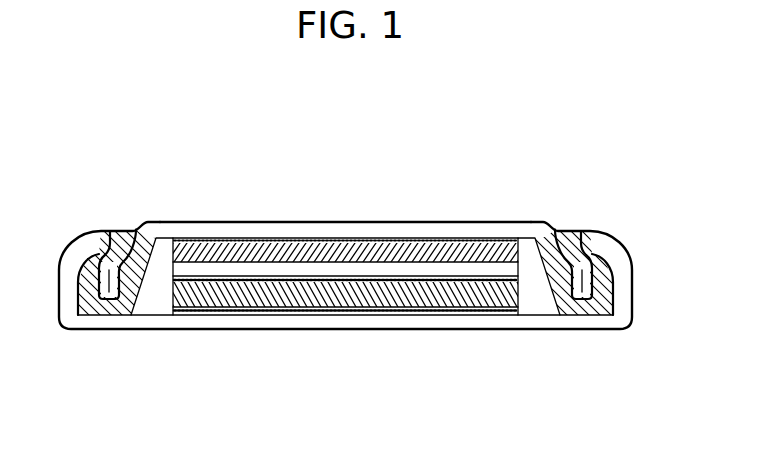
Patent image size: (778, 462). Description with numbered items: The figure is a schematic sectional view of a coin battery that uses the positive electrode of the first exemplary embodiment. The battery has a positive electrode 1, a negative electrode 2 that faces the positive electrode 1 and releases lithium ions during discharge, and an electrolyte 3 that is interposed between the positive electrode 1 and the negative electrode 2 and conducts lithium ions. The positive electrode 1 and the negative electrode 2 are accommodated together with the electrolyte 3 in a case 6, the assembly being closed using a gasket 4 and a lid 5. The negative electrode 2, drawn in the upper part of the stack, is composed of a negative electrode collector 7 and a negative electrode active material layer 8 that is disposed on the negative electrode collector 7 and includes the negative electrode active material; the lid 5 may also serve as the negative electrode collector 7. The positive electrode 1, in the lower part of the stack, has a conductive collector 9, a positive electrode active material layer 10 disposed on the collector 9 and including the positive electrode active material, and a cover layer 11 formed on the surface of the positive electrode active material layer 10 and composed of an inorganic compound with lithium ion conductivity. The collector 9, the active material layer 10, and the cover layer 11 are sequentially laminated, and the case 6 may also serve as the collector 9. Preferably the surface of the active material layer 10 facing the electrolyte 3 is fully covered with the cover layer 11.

The positive electrode 1 is at (345, 360).
The negative electrode 2 is at (344, 185).
The electrolyte 3 is at (427, 275).
The gasket 4 is at (568, 245).
The lid 5 is at (353, 230).
The case 6 is at (623, 285).
The negative electrode collector 7 is at (218, 238).
The negative electrode active material layer 8 is at (158, 168).
The collector 9 is at (202, 313).
The positive electrode active material layer 10 is at (162, 377).
The cover layer 11 is at (319, 289).